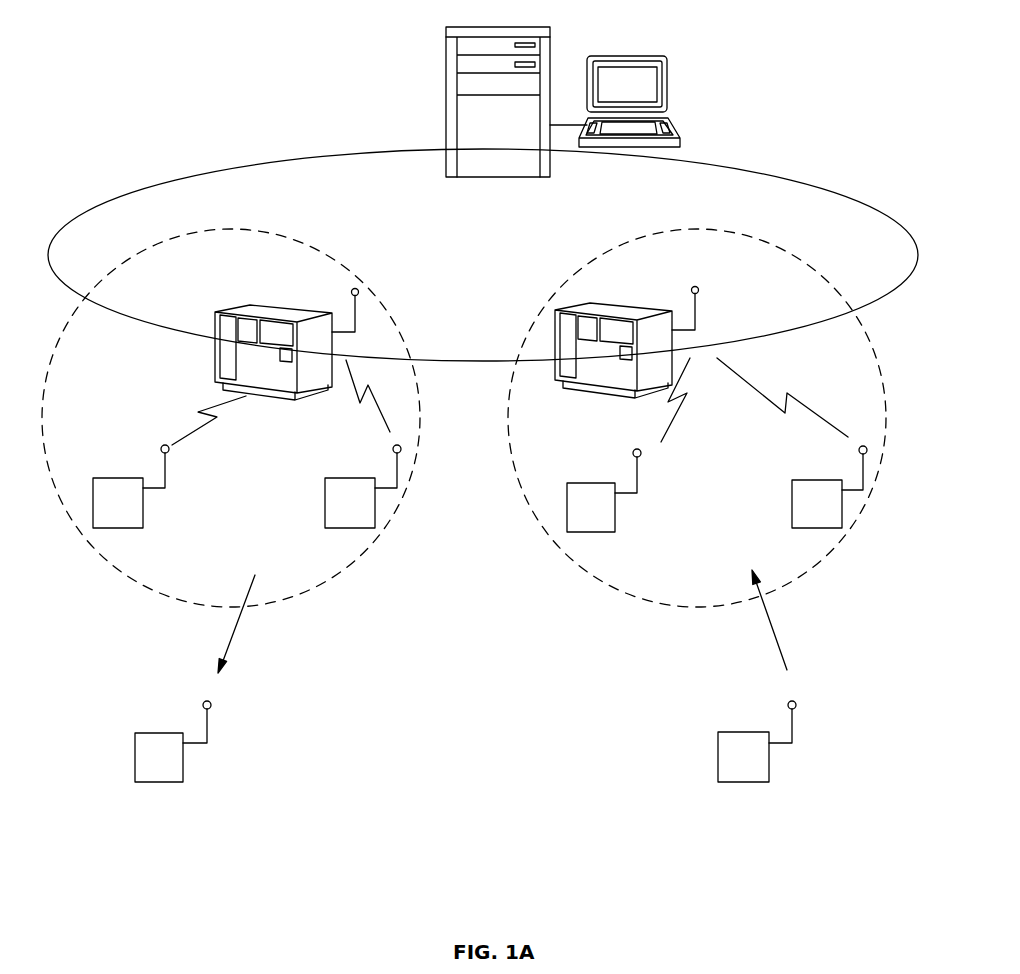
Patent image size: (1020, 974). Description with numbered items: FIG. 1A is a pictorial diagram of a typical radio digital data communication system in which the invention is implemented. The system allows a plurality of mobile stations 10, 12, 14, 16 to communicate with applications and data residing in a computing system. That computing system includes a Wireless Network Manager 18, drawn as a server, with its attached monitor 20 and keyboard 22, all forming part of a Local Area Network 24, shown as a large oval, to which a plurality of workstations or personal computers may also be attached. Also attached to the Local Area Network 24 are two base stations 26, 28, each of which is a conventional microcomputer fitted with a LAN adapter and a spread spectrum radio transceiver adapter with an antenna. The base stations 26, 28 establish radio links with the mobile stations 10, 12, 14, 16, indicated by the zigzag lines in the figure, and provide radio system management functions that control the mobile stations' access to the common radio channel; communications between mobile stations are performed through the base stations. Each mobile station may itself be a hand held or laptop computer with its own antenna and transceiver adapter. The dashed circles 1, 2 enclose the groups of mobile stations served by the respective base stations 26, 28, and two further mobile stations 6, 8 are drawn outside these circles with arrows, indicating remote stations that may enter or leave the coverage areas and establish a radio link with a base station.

The first cell 1 is at (385, 512).
The second cell 2 is at (852, 512).
The mobile station 6 is at (162, 733).
The mobile station 8 is at (747, 733).
The mobile station 10 is at (120, 478).
The mobile station 12 is at (325, 512).
The mobile station 14 is at (593, 482).
The mobile station 16 is at (792, 512).
The Wireless Network Manager 18 is at (446, 45).
The monitor 20 is at (667, 82).
The keyboard 22 is at (677, 132).
The Local Area Network 24 is at (902, 282).
The base station 26 is at (290, 305).
The base station 28 is at (607, 305).